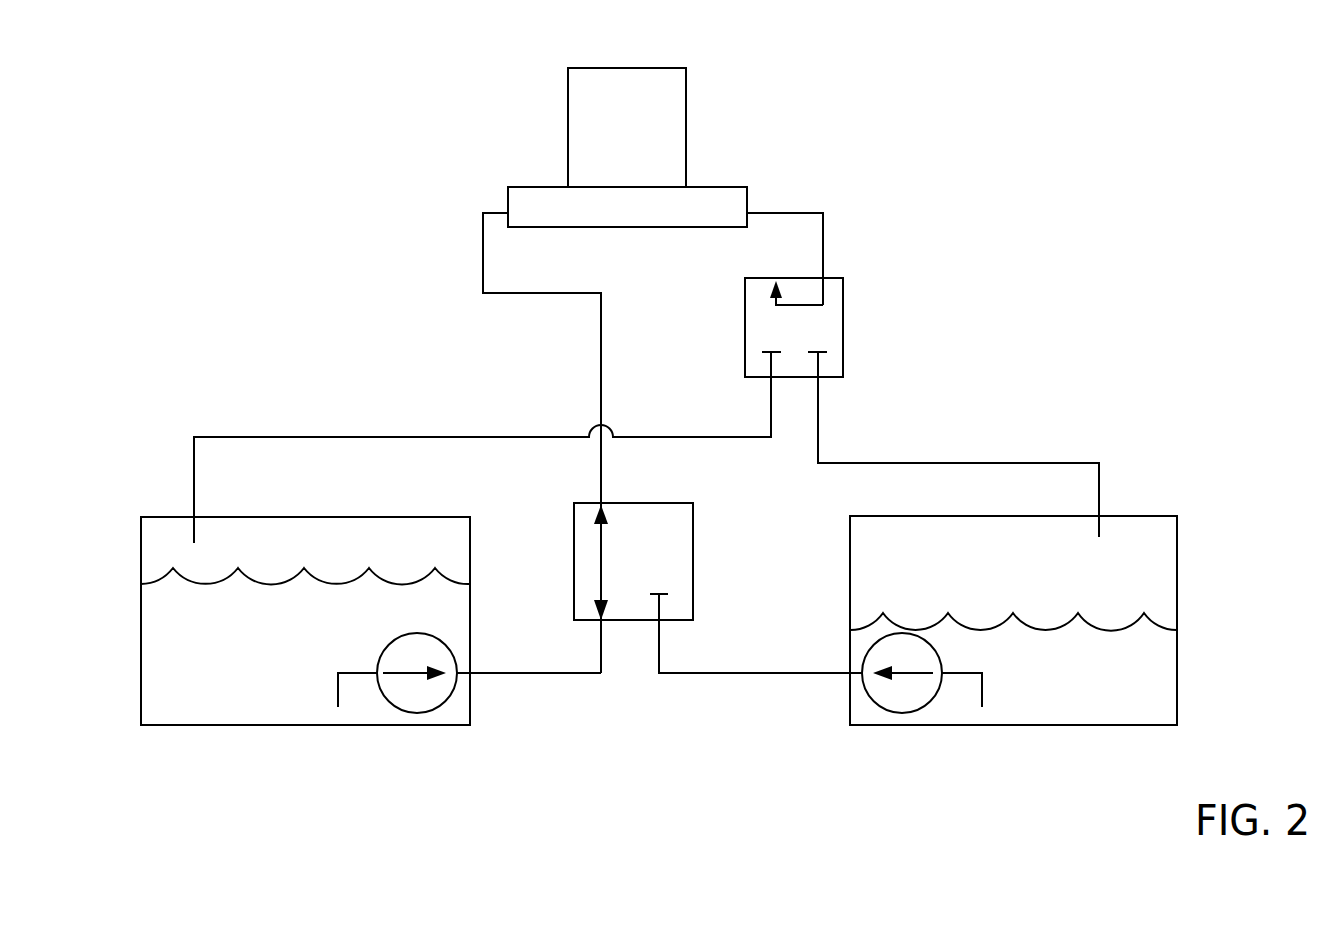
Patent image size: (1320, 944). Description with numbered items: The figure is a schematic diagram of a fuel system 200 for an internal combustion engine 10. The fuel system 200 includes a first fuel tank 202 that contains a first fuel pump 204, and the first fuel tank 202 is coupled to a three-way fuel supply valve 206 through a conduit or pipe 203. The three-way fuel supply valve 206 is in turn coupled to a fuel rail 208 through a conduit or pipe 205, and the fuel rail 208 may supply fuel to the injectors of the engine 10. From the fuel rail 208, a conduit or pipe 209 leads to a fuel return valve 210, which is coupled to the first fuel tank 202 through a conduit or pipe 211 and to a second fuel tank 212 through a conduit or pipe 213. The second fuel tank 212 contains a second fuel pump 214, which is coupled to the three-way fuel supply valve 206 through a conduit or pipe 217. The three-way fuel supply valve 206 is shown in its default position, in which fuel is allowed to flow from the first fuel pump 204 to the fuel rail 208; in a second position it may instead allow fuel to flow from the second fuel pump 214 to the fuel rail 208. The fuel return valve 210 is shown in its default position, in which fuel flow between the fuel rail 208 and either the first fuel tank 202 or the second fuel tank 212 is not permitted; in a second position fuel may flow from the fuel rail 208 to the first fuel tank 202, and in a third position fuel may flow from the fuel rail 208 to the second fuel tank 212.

The internal combustion engine 10 is at (641, 139).
The fuel system 200 is at (180, 123).
The first fuel tank 202 is at (141, 642).
The conduit or pipe 203 is at (600, 654).
The first fuel pump 204 is at (395, 654).
The conduit or pipe 205 is at (600, 363).
The three-way fuel supply valve 206 is at (573, 509).
The fuel rail 208 is at (518, 198).
The conduit or pipe 209 is at (823, 257).
The fuel return valve 210 is at (753, 299).
The conduit or pipe 211 is at (771, 416).
The second fuel tank 212 is at (850, 560).
The conduit or pipe 213 is at (819, 409).
The second fuel pump 214 is at (892, 650).
The conduit or pipe 217 is at (717, 676).